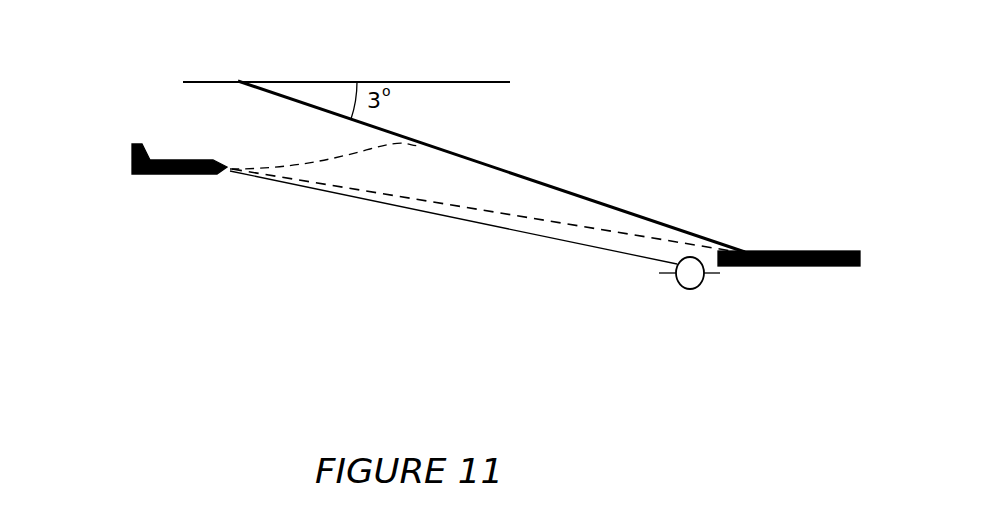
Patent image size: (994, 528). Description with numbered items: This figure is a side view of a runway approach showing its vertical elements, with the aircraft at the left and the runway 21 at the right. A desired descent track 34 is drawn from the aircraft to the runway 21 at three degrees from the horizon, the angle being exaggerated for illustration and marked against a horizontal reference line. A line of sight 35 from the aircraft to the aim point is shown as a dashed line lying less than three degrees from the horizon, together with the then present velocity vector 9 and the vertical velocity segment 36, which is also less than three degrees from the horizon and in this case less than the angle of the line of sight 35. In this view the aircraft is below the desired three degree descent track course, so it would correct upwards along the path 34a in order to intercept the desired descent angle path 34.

The desired descent track 34 is at (472, 160).
The correction path 34a is at (318, 165).
The line of sight 35 is at (533, 218).
The vertical velocity segment 36 is at (500, 227).
The velocity vector 9 is at (679, 284).
The runway 21 is at (740, 251).